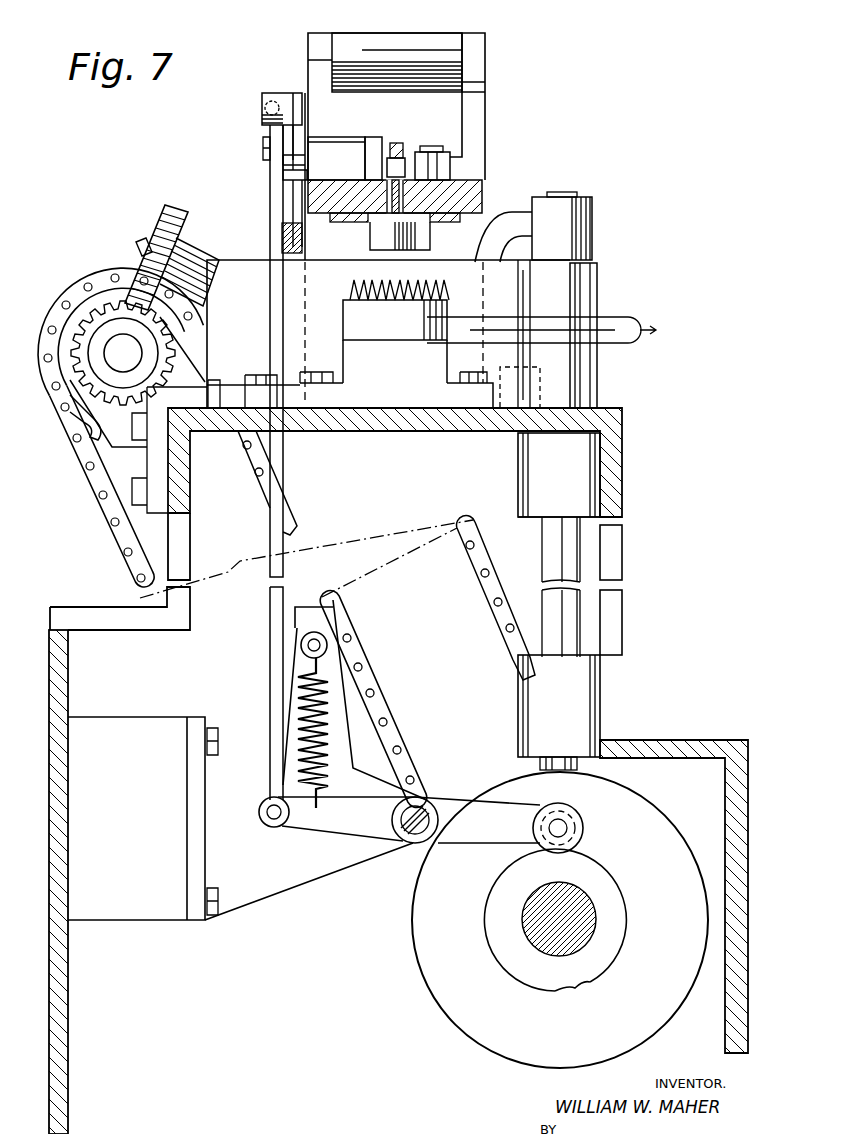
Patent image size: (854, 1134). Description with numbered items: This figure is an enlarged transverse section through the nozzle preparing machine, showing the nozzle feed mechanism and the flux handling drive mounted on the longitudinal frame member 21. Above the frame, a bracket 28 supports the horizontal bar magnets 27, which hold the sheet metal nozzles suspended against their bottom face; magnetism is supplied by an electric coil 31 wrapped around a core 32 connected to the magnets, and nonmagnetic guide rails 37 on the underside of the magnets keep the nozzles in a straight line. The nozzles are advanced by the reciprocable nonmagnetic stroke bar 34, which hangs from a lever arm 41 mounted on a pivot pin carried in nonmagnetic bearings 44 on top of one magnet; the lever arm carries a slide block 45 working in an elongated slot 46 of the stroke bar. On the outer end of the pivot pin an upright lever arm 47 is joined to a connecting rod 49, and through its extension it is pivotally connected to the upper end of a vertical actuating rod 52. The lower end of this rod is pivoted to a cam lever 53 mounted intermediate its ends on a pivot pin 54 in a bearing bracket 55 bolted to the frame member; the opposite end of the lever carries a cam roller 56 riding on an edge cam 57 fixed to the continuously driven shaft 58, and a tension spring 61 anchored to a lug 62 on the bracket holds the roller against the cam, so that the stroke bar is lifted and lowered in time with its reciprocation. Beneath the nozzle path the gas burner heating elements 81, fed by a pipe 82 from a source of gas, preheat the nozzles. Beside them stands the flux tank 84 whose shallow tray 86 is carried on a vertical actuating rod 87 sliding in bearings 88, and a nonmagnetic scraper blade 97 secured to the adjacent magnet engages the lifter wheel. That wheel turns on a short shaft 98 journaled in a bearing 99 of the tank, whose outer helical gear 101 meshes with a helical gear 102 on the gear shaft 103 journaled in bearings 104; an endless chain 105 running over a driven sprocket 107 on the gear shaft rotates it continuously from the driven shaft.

The longitudinal frame member 21 is at (60, 988).
The bar magnets 27 is at (480, 178).
The bracket 28 is at (345, 252).
The electric coil 31 is at (482, 82).
The core 32 is at (478, 50).
The stroke bar 34 is at (396, 150).
The guide rails 37 is at (338, 216).
The lever arm 41 is at (373, 148).
The nonmagnetic bearings 44 is at (336, 158).
The slide blocks 45 is at (400, 168).
The elongated slots 46 is at (398, 207).
The upright lever arm 47 is at (290, 105).
The connecting rod 49 is at (268, 95).
The vertical actuating rod 52 is at (272, 611).
The cam lever 53 is at (347, 826).
The pivot pin 54 is at (412, 846).
The bearing bracket 55 is at (268, 882).
The cam roller 56 is at (583, 838).
The edge cam 57 is at (583, 965).
The driven shaft 58 is at (585, 912).
The tension spring 61 is at (332, 748).
The lug 62 is at (312, 620).
The heating elements 81 is at (396, 310).
The pipe 82 is at (607, 326).
The flux tank 84 is at (330, 338).
The tray 86 is at (517, 226).
The vertical actuating rod 87 is at (560, 199).
The slide bearings 88 is at (583, 283).
The scraper blade 97 is at (300, 198).
The short shaft 98 is at (147, 250).
The bearing 99 is at (205, 257).
The helical gear 101 is at (178, 203).
The helical gear 102 is at (87, 320).
The gear shaft 103 is at (113, 357).
The bearings 104 is at (132, 448).
The endless chain 105 is at (98, 482).
The driven sprocket 107 is at (100, 422).